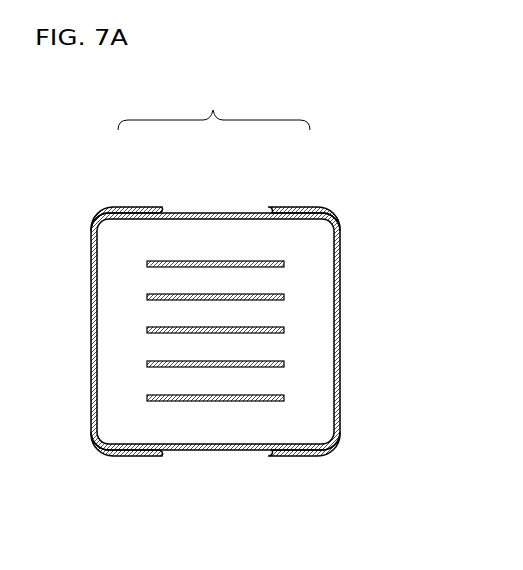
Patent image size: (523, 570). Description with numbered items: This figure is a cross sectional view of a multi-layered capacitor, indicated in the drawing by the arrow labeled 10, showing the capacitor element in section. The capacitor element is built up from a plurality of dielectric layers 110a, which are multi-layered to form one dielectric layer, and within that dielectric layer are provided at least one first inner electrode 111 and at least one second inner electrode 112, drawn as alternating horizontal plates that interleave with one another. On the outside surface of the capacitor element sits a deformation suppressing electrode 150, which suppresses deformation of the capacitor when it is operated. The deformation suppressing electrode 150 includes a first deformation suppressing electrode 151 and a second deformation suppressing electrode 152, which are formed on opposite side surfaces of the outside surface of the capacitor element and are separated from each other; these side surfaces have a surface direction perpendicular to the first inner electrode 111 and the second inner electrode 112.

The multilayer ceramic electronic component 10 is at (207, 452).
The dielectric layer 110a is at (312, 254).
The first inner electrode 111 is at (147, 264).
The second inner electrode 112 is at (284, 297).
The deformation suppressing electrode 150 is at (214, 106).
The first deformation suppressing electrode 151 is at (143, 207).
The second deformation suppressing electrode 152 is at (289, 207).